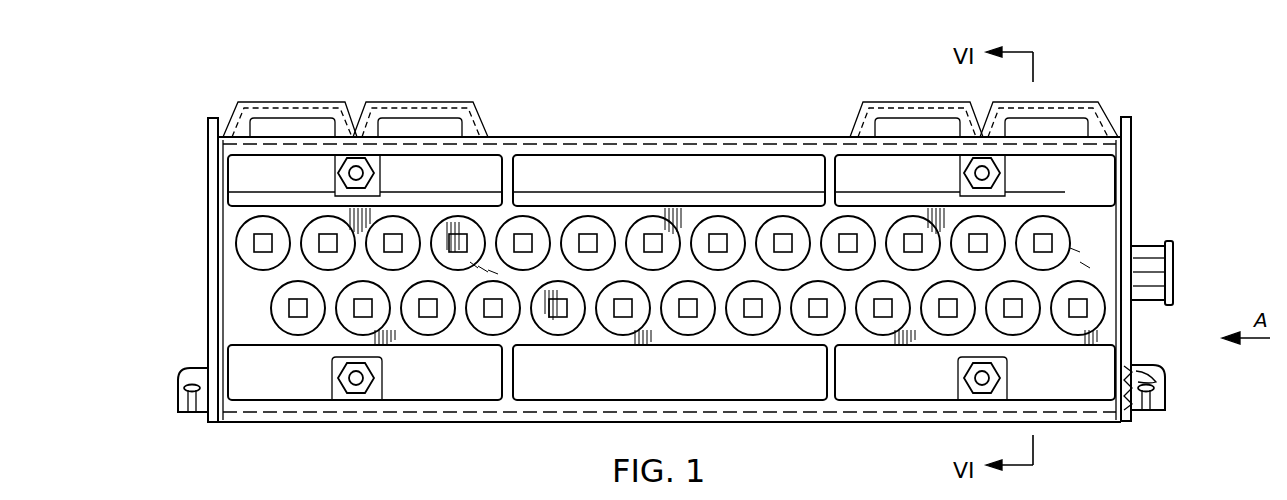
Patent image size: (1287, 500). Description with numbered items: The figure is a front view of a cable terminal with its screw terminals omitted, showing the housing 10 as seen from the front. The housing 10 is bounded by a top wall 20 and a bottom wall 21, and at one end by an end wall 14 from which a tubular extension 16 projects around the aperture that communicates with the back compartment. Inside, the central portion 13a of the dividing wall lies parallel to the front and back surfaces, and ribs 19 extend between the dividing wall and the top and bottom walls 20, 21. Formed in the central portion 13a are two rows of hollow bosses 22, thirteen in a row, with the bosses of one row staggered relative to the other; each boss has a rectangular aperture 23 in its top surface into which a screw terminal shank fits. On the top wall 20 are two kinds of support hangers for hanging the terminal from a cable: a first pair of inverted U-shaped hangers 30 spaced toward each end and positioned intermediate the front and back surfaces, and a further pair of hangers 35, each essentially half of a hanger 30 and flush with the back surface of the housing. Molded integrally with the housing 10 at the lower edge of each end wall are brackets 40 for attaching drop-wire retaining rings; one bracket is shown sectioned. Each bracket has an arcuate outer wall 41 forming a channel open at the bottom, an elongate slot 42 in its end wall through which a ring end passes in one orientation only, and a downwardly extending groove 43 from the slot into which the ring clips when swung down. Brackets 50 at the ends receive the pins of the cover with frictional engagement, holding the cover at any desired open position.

The housing 10 is at (202, 293).
The central portion of wall 13a is at (525, 330).
The end wall 14 is at (1128, 177).
The tubular extension 16 is at (1145, 245).
The ribs 19 is at (508, 183).
The top wall 20 is at (582, 148).
The bottom wall 21 is at (386, 415).
The hollow bosses 22 is at (243, 235).
The rectangular aperture 23 is at (254, 246).
The hangers 30 is at (474, 106).
The hangers 35 is at (222, 113).
The brackets 40 is at (183, 378).
The arcuate outer wall 41 is at (1158, 367).
The elongate slot 42 is at (185, 388).
The groove 43 is at (185, 412).
The brackets 50 is at (208, 140).